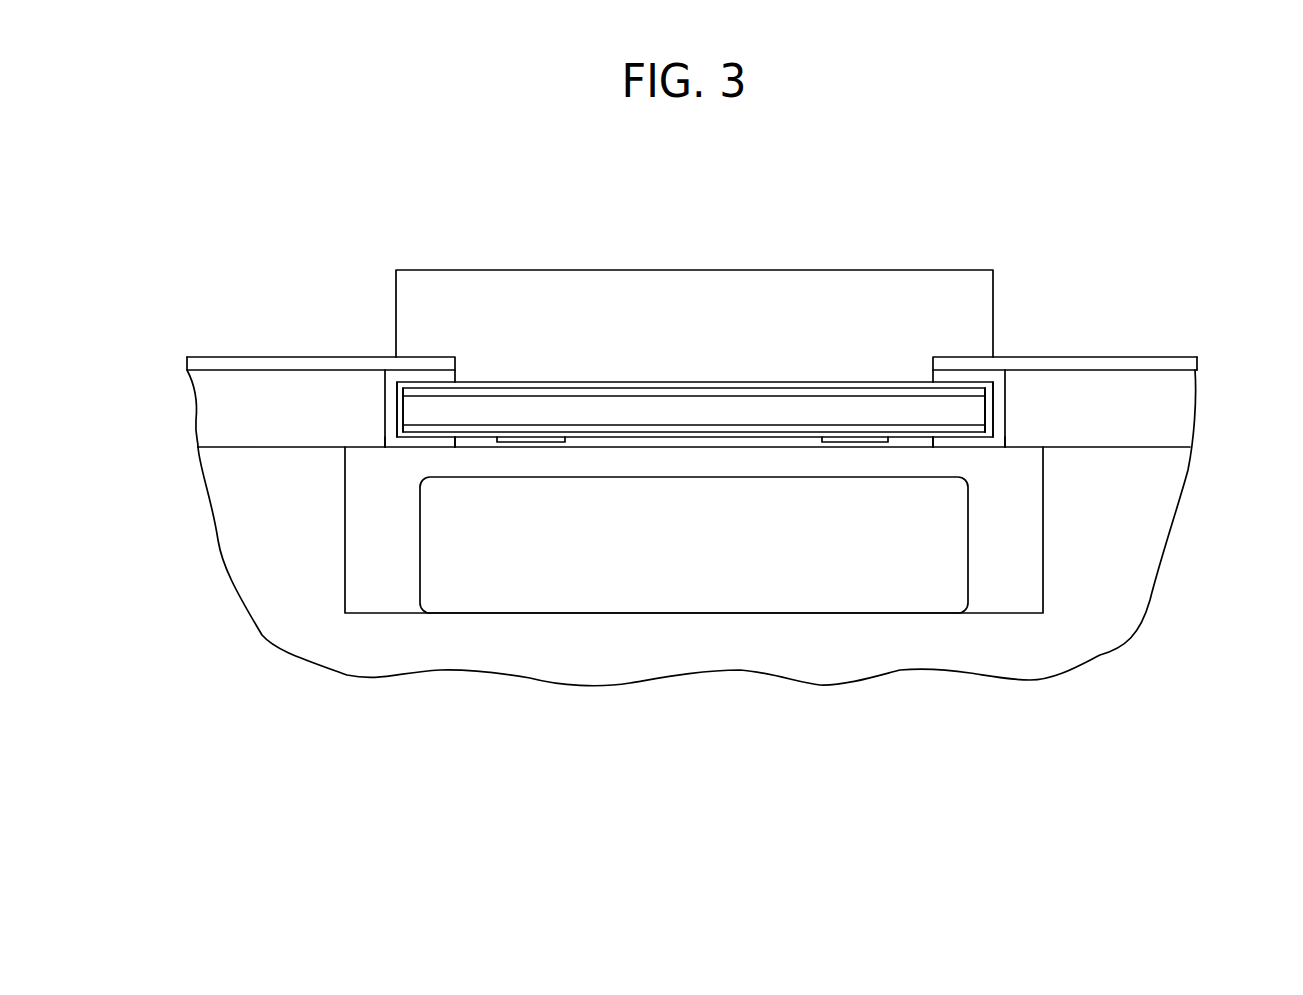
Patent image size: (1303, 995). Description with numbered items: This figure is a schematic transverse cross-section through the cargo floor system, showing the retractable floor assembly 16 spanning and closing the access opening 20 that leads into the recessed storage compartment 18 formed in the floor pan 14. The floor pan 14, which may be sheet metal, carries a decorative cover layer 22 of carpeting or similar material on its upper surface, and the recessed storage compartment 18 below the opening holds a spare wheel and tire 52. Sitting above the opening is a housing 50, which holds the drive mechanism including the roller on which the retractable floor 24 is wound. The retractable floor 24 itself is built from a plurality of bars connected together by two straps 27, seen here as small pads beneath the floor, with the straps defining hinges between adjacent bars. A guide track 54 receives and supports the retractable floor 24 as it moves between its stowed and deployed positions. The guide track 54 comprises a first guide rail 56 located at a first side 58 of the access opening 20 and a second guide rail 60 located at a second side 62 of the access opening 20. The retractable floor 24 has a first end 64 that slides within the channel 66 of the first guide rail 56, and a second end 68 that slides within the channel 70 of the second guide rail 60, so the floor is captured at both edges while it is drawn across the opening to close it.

The floor pan 14 is at (253, 400).
The retractable floor assembly 16 is at (1058, 212).
The recessed storage compartment 18 is at (1025, 555).
The access opening 20 is at (730, 447).
The decorative cover layer 22 is at (718, 393).
The retractable floor 24 is at (658, 410).
The straps 27 is at (533, 442).
The housing 50 is at (840, 308).
The spare wheel and tire 52 is at (767, 573).
The guide track 54 is at (370, 457).
The first guide rail 56 is at (410, 447).
The first side 58 is at (457, 440).
The second guide rail 60 is at (973, 447).
The second side 62 is at (933, 440).
The first end 64 is at (400, 407).
The channel 66 is at (403, 416).
The second end 68 is at (995, 416).
The channel 70 is at (992, 417).